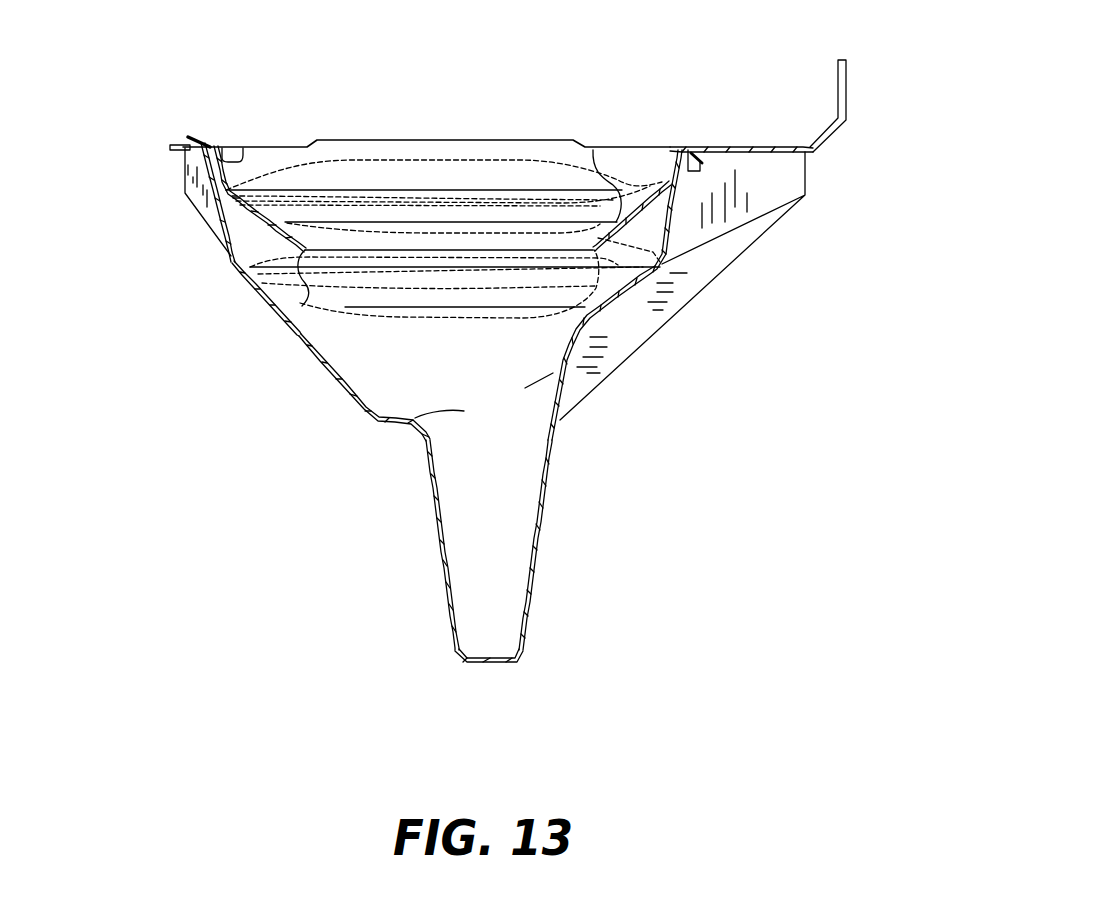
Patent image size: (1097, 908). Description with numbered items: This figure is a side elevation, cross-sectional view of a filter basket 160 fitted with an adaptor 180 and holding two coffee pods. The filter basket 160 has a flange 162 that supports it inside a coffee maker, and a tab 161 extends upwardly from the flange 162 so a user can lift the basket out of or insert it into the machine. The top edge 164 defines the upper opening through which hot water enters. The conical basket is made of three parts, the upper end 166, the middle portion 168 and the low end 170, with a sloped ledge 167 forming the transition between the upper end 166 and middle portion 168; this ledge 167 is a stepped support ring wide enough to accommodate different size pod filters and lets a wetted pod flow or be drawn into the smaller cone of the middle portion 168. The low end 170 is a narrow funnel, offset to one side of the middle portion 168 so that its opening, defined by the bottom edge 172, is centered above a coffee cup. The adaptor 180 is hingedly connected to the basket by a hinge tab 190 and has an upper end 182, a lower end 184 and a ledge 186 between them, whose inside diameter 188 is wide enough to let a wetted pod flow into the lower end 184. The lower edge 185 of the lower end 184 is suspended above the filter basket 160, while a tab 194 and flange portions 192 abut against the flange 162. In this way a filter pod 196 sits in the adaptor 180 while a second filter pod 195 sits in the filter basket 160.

The filter basket 160 is at (312, 396).
The tab 161 is at (845, 80).
The flange 162 is at (188, 145).
The top edge 164 is at (190, 150).
The upper end 166 is at (205, 188).
The ledge 167 is at (262, 288).
The middle portion 168 is at (323, 358).
The low end 170 is at (545, 522).
The bottom edge 172 is at (510, 663).
The adaptor 180 is at (328, 150).
The upper end 182 is at (240, 150).
The lower end 184 is at (303, 249).
The lower edge 185 is at (297, 303).
The ledge 186 is at (633, 183).
The inside diameter 188 is at (617, 183).
The hinge tab 190 is at (703, 150).
The flange portions 192 is at (402, 140).
The tab 194 is at (203, 146).
The second filter pod 195 is at (600, 313).
The filter pod 196 is at (663, 267).